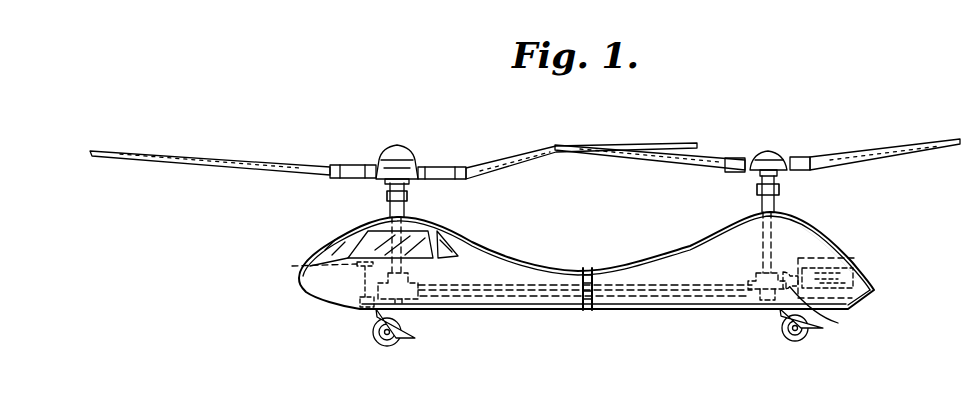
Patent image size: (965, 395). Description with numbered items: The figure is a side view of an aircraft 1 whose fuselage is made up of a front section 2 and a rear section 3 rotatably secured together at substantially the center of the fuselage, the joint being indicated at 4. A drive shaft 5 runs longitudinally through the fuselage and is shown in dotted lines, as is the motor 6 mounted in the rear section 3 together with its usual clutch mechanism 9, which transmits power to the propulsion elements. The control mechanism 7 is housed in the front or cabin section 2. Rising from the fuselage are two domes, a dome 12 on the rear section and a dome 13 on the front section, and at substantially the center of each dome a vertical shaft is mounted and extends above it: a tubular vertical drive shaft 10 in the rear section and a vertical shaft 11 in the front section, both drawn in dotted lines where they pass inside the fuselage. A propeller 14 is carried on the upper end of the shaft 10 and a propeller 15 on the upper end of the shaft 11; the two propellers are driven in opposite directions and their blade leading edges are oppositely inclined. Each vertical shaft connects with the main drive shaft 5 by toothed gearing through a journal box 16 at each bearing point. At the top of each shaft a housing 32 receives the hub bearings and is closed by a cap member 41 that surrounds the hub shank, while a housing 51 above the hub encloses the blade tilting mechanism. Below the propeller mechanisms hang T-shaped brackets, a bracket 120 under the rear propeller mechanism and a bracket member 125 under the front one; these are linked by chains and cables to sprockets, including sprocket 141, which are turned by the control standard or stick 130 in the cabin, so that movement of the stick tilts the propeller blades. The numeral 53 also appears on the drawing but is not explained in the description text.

The aircraft 1 is at (647, 268).
The front section 2 is at (502, 249).
The rear section 3 is at (822, 238).
The rotatable connection 4 is at (593, 266).
The drive shaft 5 is at (541, 263).
The motor 6 is at (858, 269).
The control mechanism 7 is at (362, 291).
The clutch mechanism 9 is at (815, 313).
The vertical drive shaft 10 is at (797, 214).
The vertical shaft 11 is at (411, 218).
The dome 12 is at (743, 216).
The dome 13 is at (430, 232).
The propeller 14 is at (853, 167).
The propeller 15 is at (480, 177).
The journal box 16 is at (778, 306).
The housing 32 is at (781, 195).
The cap member 41 is at (386, 195).
The housing 51 is at (782, 161).
The front rotor blade 53 is at (197, 165).
The T-shaped bracket 120 is at (756, 303).
The T-shaped bracket member 125 is at (426, 306).
The standard or stick 130 is at (311, 269).
The sprocket 141 is at (365, 306).